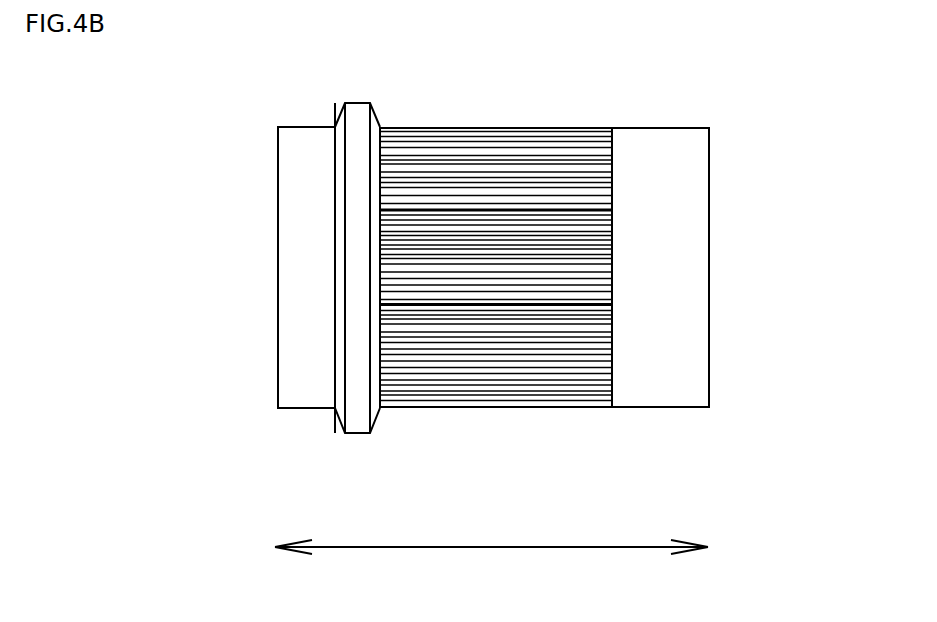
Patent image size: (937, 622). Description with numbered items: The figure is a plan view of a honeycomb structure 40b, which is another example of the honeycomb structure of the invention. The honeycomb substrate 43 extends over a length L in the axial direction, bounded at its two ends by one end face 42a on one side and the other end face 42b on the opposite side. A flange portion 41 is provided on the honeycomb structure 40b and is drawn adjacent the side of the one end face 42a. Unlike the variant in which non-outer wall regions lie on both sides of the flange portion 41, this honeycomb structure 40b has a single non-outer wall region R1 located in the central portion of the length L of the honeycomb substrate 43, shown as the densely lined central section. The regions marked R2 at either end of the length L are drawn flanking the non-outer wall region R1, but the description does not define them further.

The honeycomb structure 40b is at (236, 128).
The flange portion 41 is at (363, 113).
The one end face 42a is at (278, 268).
The other end face 42b is at (710, 268).
The honeycomb substrate 43 is at (643, 392).
The non-outer wall region R1 is at (495, 432).
The unthreaded region R2 is at (310, 438).
The length L is at (407, 548).